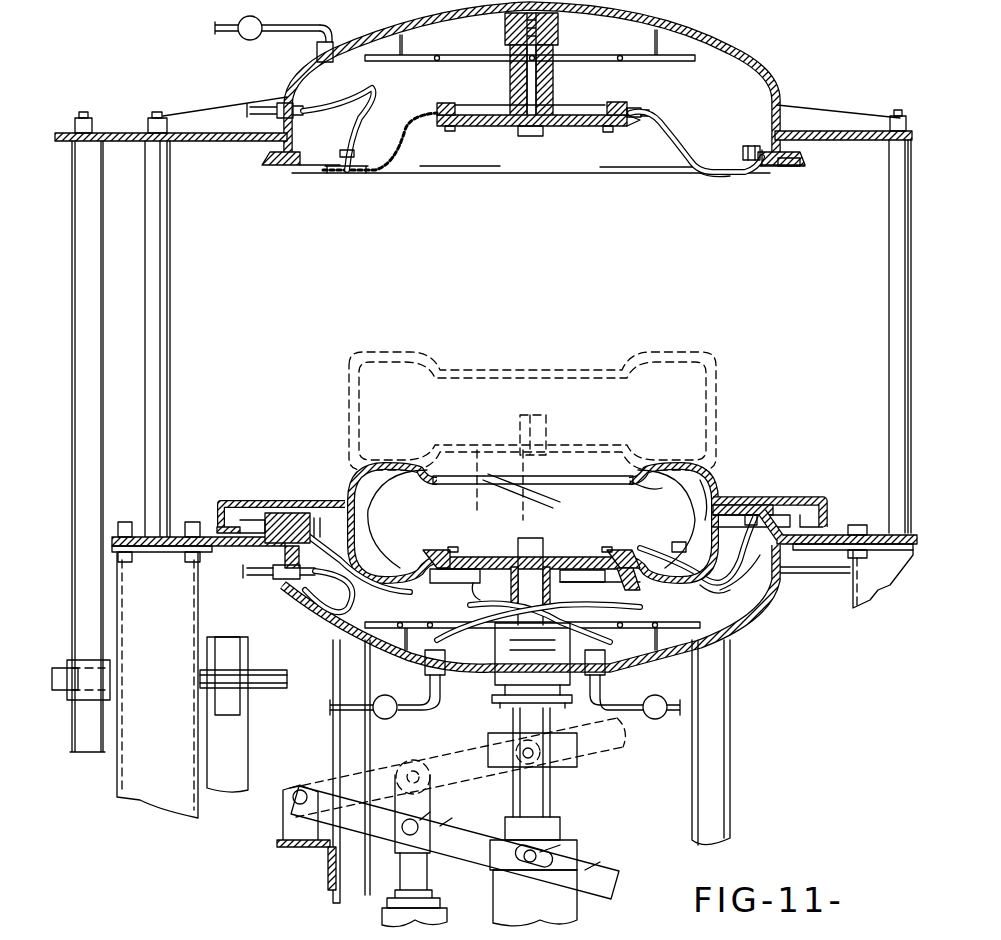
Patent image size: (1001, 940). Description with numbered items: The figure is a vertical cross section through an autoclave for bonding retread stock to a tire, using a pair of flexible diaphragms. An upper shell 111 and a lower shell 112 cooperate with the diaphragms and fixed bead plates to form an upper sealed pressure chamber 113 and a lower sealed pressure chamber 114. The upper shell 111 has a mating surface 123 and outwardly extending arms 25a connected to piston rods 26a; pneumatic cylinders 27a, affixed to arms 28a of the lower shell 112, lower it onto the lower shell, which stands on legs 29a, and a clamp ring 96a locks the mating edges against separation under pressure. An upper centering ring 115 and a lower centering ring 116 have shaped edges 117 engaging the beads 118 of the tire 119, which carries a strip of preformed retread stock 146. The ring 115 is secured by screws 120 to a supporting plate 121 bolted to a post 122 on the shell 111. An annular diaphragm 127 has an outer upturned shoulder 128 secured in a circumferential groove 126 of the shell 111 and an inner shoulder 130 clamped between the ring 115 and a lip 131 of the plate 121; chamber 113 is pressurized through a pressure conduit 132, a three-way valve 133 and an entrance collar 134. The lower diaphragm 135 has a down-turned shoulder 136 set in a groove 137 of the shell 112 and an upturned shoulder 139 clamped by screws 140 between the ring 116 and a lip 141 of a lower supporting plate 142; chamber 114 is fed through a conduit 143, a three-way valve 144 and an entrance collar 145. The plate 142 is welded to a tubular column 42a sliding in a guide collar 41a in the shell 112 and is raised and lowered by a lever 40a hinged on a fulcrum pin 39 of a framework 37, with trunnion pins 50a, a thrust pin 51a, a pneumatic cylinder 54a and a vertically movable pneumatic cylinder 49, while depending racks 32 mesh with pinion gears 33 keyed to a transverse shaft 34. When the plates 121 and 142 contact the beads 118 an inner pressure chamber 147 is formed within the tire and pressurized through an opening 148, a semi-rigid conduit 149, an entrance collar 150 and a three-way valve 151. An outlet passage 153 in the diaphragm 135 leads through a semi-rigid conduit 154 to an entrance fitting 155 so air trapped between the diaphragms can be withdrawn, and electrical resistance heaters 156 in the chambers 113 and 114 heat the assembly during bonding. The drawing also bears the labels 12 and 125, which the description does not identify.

The mold plate 12 is at (532, 103).
The outwardly extending arms 25a is at (188, 145).
The piston rods 26a is at (170, 228).
The pneumatic cylinders 27a is at (117, 782).
The arms 28a is at (212, 530).
The legs 29a is at (333, 755).
The depending racks 32 is at (106, 352).
The pinion gears 33 is at (68, 668).
The transverse shaft 34 is at (262, 672).
The framework 37 is at (277, 842).
The fulcrum pin 39 is at (293, 799).
The lever 40a is at (480, 742).
The guide collar 41a is at (495, 683).
The tubular column 42a is at (490, 603).
The pneumatic cylinder 49 is at (578, 918).
The trunnion pins 50a is at (568, 772).
The thrust pin 51a is at (420, 825).
The pneumatic cylinder 54a is at (483, 888).
The clamp ring 96a is at (827, 510).
The upper shell member 111 is at (760, 72).
The lower shell member 112 is at (780, 590).
The upper sealed pressure chamber 113 is at (742, 114).
The lower sealed pressure chamber 114 is at (747, 573).
The upper tire centering ring 115 is at (623, 130).
The lower tire centering ring 116 is at (672, 542).
The shaped edges 117 is at (640, 122).
The tire bead 118 is at (640, 492).
The tire 119 is at (715, 468).
The screws 120 is at (610, 130).
The supporting plate 121 is at (488, 118).
The post 122 is at (507, 38).
The upper mating surface 123 is at (790, 170).
The flange 125 is at (800, 162).
The circumferential groove 126 is at (768, 170).
The annular diaphragm 127 is at (685, 176).
The upturned shoulder portion 128 is at (745, 158).
The shoulder portion 130 is at (650, 112).
The lip 131 is at (613, 106).
The pressure conduit 132 is at (217, 34).
The 3-way valve 133 is at (257, 20).
The entrance collar 134 is at (318, 50).
The second flexible annular diaphragm 135 is at (705, 584).
The down turned shoulder portion 136 is at (752, 527).
The groove 137 is at (757, 503).
The upturned shoulder portion 139 is at (610, 582).
The screws 140 is at (553, 514).
The lip 141 is at (640, 580).
The lower supporting plate 142 is at (516, 560).
The pressure conduit 143 is at (645, 705).
The 3-way valve 144 is at (640, 720).
The entrance collar 145 is at (607, 670).
The retread stock 146 is at (350, 478).
The inner pressure chamber 147 is at (445, 517).
The opening 148 is at (487, 535).
The semi-rigid conduit 149 is at (622, 630).
The entrance collar 150 is at (425, 672).
The 3-way valve 151 is at (383, 720).
The outlet passage 153 is at (352, 552).
The semi-rigid conduit 154 is at (343, 600).
The entrance fitting 155 is at (282, 583).
The electrical resistance heaters 156 is at (655, 55).